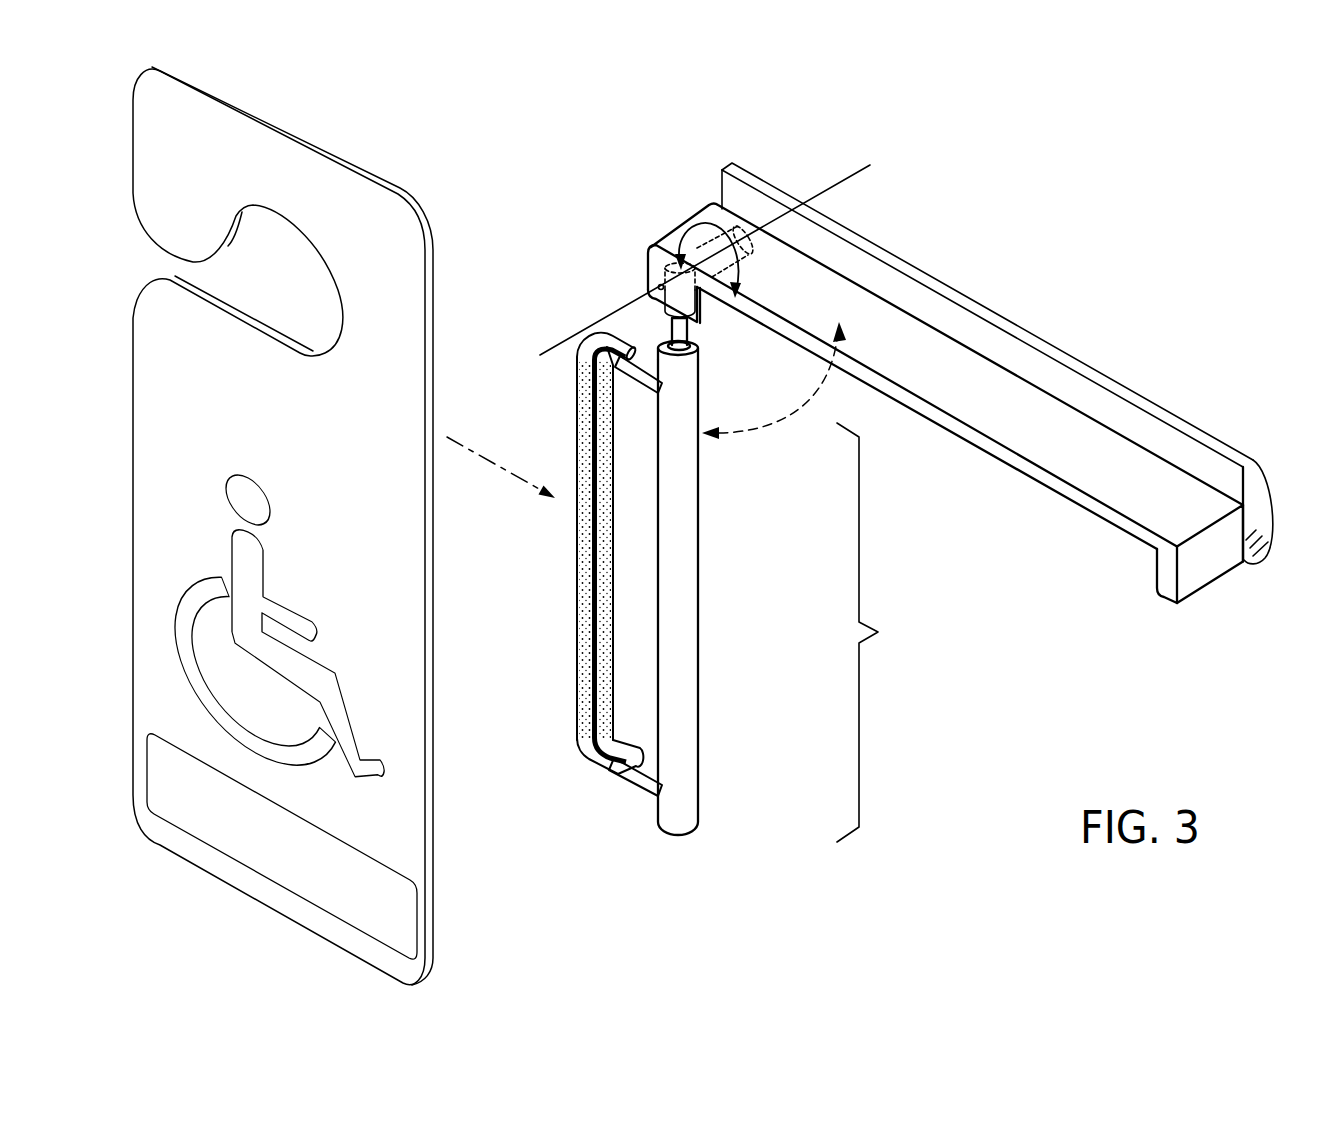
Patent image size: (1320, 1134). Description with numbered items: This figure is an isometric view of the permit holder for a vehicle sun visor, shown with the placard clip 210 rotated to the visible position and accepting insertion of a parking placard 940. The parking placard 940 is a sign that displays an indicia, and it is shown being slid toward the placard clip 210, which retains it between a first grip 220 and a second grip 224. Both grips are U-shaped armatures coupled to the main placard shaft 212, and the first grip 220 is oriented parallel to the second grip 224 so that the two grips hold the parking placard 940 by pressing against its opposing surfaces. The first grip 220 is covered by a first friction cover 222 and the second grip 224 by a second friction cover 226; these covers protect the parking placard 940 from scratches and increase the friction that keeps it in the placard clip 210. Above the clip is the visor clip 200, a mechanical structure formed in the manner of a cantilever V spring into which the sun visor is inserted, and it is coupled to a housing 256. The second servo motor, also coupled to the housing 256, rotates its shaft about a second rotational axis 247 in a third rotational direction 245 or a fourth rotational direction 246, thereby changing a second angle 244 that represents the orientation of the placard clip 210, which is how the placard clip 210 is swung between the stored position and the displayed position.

The parking placard 940 is at (343, 178).
The visor clip 200 is at (1170, 427).
The second rotational axis 247 is at (828, 192).
The housing 256 is at (1213, 565).
The fourth rotational direction 246 is at (742, 278).
The third rotational direction 245 is at (674, 247).
The second angle 244 is at (774, 380).
The main placard shaft 212 is at (680, 838).
The placard clip 210 is at (891, 632).
The first grip 220 is at (631, 782).
The first friction cover 222 is at (600, 700).
The second grip 224 is at (652, 778).
The second friction cover 226 is at (592, 640).